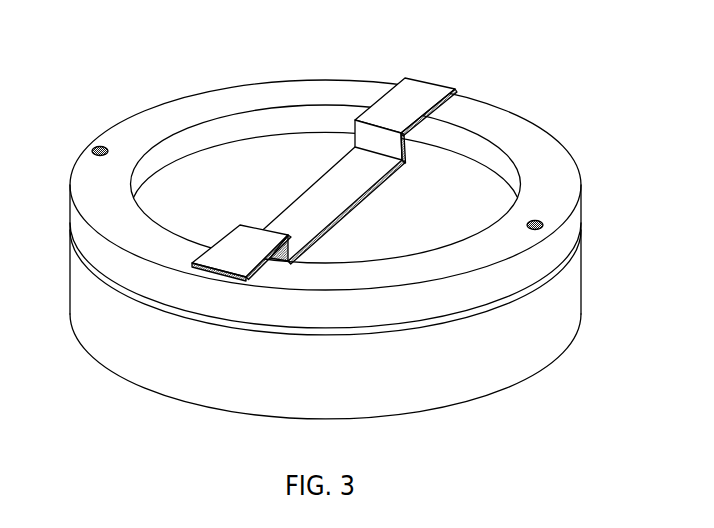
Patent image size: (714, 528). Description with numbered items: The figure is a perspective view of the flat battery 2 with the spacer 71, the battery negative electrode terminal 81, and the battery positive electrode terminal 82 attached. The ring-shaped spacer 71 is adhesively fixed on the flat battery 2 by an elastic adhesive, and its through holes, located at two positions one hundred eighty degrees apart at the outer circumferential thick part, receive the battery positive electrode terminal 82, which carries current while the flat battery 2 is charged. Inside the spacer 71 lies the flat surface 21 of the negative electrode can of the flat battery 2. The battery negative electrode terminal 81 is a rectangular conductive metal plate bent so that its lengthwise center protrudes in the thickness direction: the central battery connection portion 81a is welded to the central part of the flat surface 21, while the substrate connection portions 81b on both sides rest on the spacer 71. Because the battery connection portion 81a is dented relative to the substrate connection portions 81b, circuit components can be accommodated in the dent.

The flat battery 2 is at (330, 229).
The flat surface 21 is at (157, 200).
The spacer 71 is at (130, 128).
The battery negative electrode terminal 81 is at (334, 140).
The battery connection portion 81a is at (341, 198).
The substrate connection portions 81b is at (403, 98).
The battery positive electrode terminal 82 is at (90, 143).